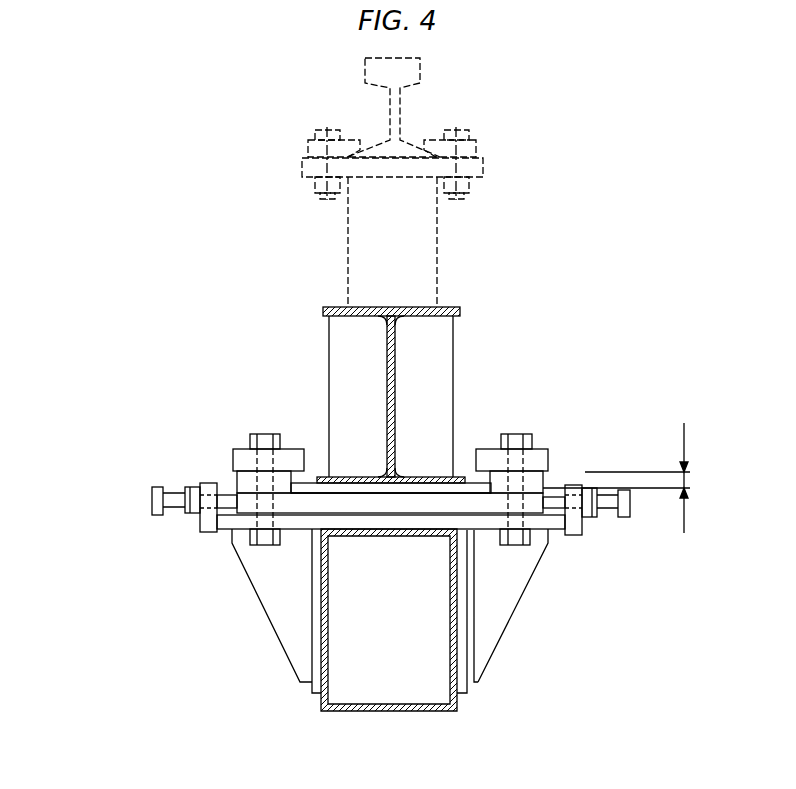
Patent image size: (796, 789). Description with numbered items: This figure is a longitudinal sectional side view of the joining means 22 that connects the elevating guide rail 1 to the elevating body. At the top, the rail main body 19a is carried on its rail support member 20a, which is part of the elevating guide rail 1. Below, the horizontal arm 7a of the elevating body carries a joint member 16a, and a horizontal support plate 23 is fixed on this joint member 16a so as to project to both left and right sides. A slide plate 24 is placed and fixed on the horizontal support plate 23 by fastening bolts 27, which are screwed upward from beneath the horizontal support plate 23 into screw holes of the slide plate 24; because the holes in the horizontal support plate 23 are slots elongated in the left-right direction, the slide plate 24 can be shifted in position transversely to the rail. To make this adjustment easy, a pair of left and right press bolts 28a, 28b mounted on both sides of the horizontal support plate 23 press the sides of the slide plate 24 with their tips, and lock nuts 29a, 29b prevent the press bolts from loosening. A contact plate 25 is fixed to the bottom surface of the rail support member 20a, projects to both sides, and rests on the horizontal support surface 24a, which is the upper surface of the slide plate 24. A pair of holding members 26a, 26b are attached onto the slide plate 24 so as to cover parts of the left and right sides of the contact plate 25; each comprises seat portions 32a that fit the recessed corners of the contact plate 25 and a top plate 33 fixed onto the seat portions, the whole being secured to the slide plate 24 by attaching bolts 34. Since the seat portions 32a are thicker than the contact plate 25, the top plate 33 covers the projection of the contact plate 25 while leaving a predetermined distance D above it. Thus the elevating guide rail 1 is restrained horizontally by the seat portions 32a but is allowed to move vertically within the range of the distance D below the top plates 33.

The elevating guide rail 1 is at (422, 110).
The rail main body 19a is at (390, 120).
The rail support member 20a is at (417, 307).
The joining means 22 is at (393, 491).
The horizontal support plate 23 is at (360, 520).
The slide plate 24 is at (405, 503).
The horizontal support surface 24a is at (425, 493).
The contact plate 25 is at (358, 486).
The holding member 26a is at (227, 450).
The holding member 26b is at (542, 446).
The fastening bolt 27 is at (265, 546).
The press bolt 28a is at (154, 500).
The press bolt 28b is at (627, 503).
The lock nut 29a is at (192, 514).
The lock nut 29b is at (588, 513).
The seat portion 32a is at (393, 491).
The top plate 33 is at (240, 460).
The attaching bolt 34 is at (265, 436).
The joint member 16a is at (320, 648).
The horizontal arm 7a is at (497, 681).
The predetermined distance D is at (630, 478).